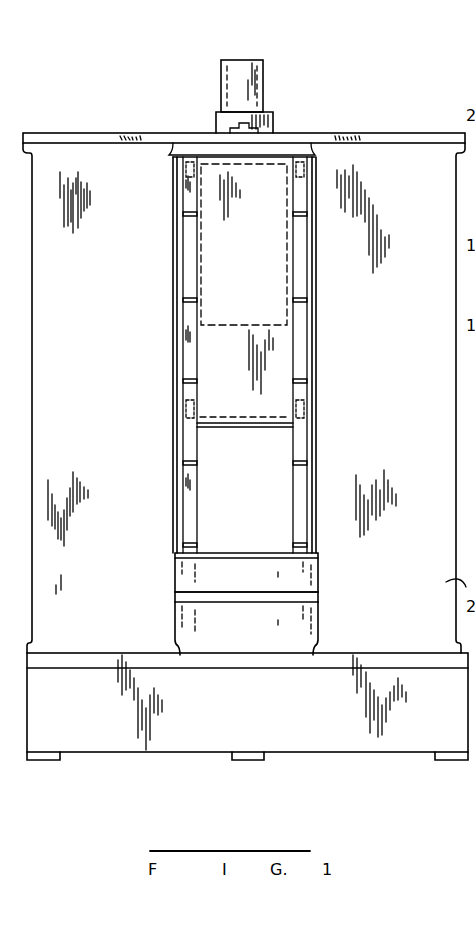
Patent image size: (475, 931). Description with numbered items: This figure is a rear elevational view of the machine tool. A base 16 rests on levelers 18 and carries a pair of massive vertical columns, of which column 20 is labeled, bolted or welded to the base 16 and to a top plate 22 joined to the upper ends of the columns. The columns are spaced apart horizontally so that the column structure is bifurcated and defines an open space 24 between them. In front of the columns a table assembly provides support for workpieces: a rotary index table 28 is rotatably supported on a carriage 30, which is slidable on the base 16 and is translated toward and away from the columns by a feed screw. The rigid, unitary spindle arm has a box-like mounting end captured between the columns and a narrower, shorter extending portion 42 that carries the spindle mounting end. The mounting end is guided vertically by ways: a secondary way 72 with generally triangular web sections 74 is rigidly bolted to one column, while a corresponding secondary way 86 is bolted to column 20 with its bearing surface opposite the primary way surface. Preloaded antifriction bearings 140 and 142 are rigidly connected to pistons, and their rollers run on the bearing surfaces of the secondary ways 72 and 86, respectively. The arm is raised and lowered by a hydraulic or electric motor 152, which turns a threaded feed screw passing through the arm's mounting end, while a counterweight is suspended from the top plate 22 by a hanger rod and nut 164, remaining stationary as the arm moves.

The base 16 is at (215, 733).
The levelers 18 is at (47, 756).
The vertical column 20 is at (98, 617).
The top plate 22 is at (93, 136).
The open space 24 is at (242, 348).
The rotary index table 28 is at (253, 577).
The carriage 30 is at (238, 628).
The extending portion 42 is at (236, 328).
The secondary way 72 is at (298, 358).
The web sections 74 is at (300, 217).
The secondary way 86 is at (188, 345).
The antifriction bearing 140 is at (299, 160).
The antifriction bearing 142 is at (190, 160).
The motor 152 is at (238, 82).
The nut 164 is at (218, 131).